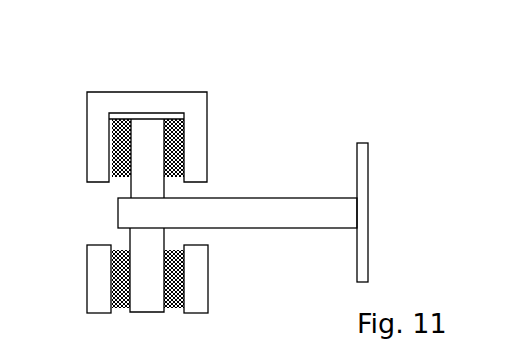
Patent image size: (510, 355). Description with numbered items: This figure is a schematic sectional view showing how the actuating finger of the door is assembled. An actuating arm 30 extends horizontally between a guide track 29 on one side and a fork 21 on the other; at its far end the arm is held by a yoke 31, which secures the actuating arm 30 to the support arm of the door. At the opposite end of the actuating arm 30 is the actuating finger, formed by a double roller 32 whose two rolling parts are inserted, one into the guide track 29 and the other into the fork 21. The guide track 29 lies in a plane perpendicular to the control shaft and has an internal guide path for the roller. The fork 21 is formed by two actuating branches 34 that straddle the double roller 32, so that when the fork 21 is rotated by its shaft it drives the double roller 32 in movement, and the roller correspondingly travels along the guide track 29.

The fork 21 is at (208, 276).
The guide track 29 is at (158, 102).
The actuating arm 30 is at (246, 205).
The yoke 31 is at (363, 167).
The double roller 32 is at (130, 239).
The actuating branches 34 is at (92, 301).